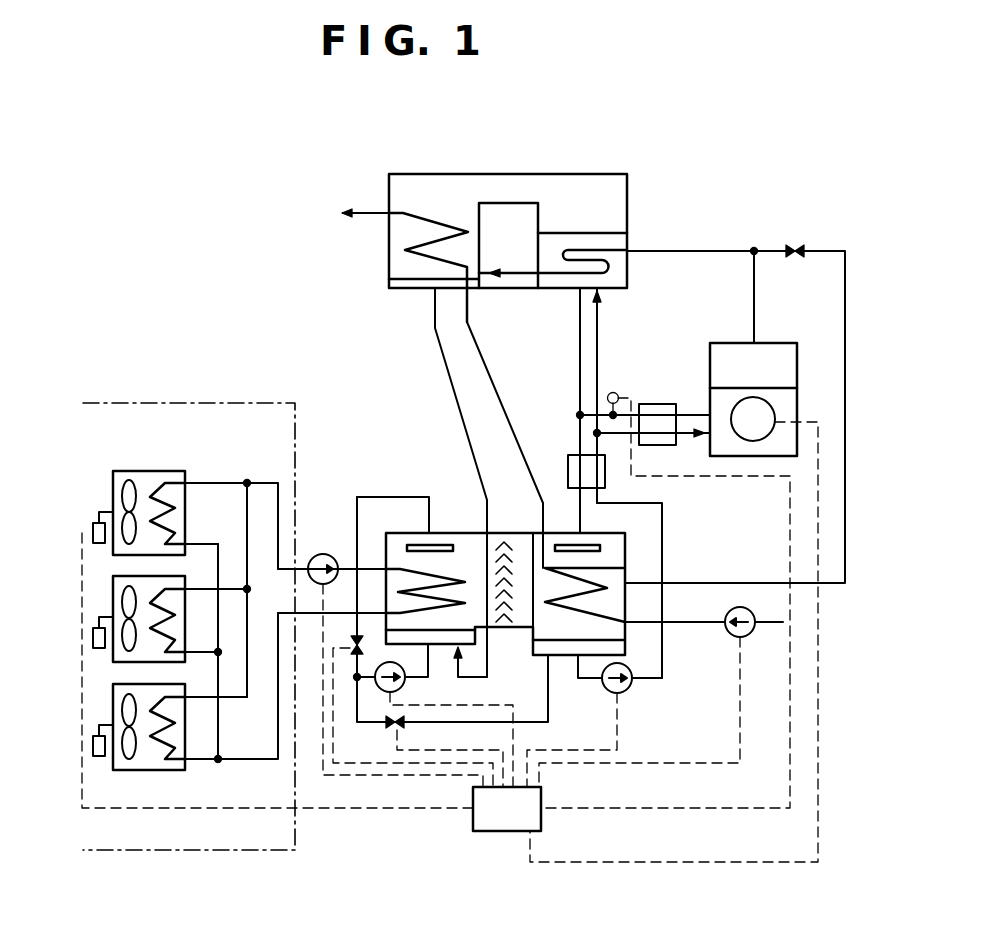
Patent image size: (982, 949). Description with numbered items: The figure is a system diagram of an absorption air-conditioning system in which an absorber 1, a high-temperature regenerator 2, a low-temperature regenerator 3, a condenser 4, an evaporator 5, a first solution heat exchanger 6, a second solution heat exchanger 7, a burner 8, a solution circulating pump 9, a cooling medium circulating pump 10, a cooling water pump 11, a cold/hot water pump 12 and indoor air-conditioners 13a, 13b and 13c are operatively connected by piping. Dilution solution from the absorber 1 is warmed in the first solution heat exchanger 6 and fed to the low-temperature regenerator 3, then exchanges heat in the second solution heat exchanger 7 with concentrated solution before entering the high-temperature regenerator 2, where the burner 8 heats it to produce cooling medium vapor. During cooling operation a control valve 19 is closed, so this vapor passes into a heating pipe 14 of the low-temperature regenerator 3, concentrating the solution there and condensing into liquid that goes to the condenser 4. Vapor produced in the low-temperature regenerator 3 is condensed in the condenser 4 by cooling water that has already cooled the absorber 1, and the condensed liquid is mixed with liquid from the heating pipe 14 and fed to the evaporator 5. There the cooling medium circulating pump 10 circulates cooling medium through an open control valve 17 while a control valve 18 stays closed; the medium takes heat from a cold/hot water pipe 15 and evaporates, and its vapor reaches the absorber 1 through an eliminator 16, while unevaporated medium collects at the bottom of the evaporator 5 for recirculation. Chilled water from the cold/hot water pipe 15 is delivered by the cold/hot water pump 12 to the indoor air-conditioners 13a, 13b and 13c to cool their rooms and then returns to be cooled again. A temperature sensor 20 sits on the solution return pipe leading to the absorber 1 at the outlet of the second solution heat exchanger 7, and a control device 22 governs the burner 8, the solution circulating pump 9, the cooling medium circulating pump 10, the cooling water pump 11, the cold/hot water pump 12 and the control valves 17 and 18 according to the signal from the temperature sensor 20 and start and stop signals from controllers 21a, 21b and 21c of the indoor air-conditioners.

The absorber 1 is at (618, 560).
The high-temperature regenerator 2 is at (790, 410).
The low-temperature regenerator 3 is at (630, 250).
The condenser 4 is at (397, 192).
The evaporator 5 is at (403, 532).
The first solution heat exchanger 6 is at (568, 466).
The second solution heat exchanger 7 is at (669, 404).
The burner 8 is at (757, 456).
The solution circulating pump 9 is at (630, 690).
The cooling medium circulating pump 10 is at (403, 684).
The cooling water pump 11 is at (752, 638).
The cold/hot water pump 12 is at (328, 553).
The indoor air-conditioner 13a is at (114, 476).
The indoor air-conditioner 13b is at (114, 592).
The indoor air-conditioner 13c is at (114, 694).
The heating pipe 14 is at (618, 274).
The cold/hot water pipe 15 is at (460, 546).
The eliminator 16 is at (503, 547).
The control valve 17 is at (356, 643).
The control valve 18 is at (390, 730).
The control valve 19 is at (797, 248).
The temperature sensor 20 is at (613, 392).
The controller 21a is at (93, 526).
The controller 21b is at (93, 636).
The controller 21c is at (93, 742).
The control device 22 is at (487, 833).